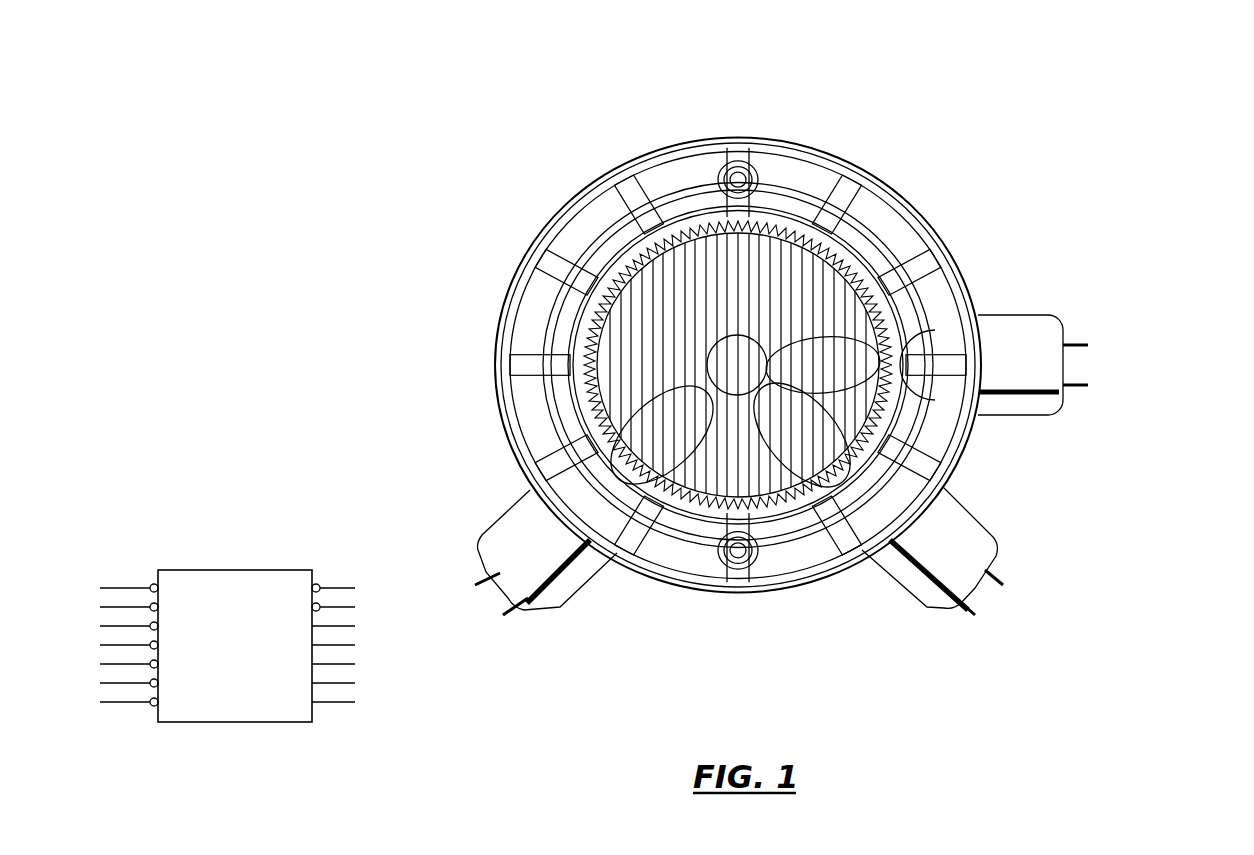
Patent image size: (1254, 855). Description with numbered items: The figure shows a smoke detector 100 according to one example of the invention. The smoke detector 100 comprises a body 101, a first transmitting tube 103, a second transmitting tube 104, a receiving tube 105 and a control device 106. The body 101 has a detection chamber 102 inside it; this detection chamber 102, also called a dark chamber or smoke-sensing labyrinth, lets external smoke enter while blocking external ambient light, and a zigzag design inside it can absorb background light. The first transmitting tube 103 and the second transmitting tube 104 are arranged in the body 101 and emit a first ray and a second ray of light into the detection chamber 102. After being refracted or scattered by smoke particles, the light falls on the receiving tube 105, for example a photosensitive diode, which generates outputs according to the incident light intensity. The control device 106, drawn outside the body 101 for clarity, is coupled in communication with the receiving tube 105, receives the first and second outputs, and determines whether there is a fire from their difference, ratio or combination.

The smoke detector 100 is at (670, 372).
The body 101 is at (827, 147).
The detection chamber 102 is at (587, 330).
The first transmitting tube 103 is at (1068, 300).
The second transmitting tube 104 is at (993, 520).
The receiving tube 105 is at (465, 535).
The control device 106 is at (208, 552).